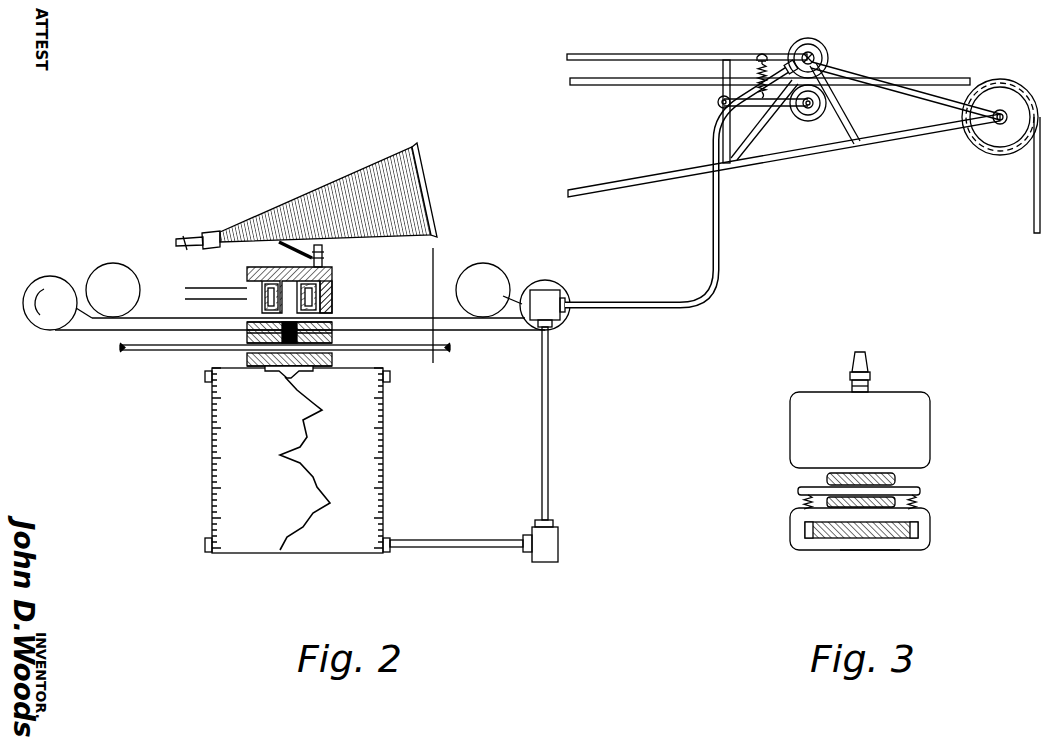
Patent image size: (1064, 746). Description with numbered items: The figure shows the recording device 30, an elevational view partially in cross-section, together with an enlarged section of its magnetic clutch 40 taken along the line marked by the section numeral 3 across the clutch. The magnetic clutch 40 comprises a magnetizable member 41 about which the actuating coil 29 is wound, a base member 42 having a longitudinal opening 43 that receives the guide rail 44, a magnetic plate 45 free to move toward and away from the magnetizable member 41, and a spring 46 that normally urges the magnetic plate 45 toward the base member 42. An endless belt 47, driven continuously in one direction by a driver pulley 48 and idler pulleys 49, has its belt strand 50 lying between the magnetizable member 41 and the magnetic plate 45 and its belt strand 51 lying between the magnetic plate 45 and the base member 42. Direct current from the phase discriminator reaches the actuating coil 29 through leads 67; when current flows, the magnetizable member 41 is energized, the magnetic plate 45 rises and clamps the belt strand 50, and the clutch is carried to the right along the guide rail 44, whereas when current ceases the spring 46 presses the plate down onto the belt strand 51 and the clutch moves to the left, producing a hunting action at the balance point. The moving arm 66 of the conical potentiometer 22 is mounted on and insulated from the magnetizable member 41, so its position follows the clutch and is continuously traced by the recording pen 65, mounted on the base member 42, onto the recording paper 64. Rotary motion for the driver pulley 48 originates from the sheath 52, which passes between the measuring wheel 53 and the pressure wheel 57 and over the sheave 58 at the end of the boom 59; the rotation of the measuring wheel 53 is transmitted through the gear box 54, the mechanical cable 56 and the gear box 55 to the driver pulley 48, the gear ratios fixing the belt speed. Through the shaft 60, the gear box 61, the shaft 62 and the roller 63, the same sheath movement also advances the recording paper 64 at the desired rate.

In FIG. 2, the potentiometer 22 is at (295, 200).
In FIG. 2, the moving arm 66 is at (282, 242).
In FIG. 3, the moving arm 66 is at (870, 358).
In FIG. 2, the magnetic clutch 40 is at (360, 298).
In FIG. 3, the magnetic clutch 40 is at (953, 429).
In FIG. 2, the magnetizable member 41 is at (247, 273).
In FIG. 3, the magnetizable member 41 is at (788, 422).
In FIG. 2, the actuating coil 29 is at (334, 285).
In FIG. 2, the leads 67 is at (188, 286).
In FIG. 2, the base member 42 is at (247, 340).
In FIG. 3, the base member 42 is at (790, 532).
In FIG. 2, the magnetic plate 45 is at (333, 326).
In FIG. 3, the magnetic plate 45 is at (922, 492).
In FIG. 2, the longitudinal opening 43 is at (333, 338).
In FIG. 3, the longitudinal opening 43 is at (826, 540).
In FIG. 2, the belt strand 50 is at (366, 316).
In FIG. 3, the belt strand 50 is at (825, 478).
In FIG. 2, the spring 46 is at (333, 360).
In FIG. 3, the spring 46 is at (916, 503).
In FIG. 3, the belt strand 51 is at (804, 500).
In FIG. 2, the guide rail 44 is at (128, 352).
In FIG. 3, the guide rail 44 is at (918, 530).
In FIG. 2, the endless belt 47 is at (82, 282).
In FIG. 2, the idler pulleys 49 is at (36, 328).
In FIG. 2, the driver pulley 48 is at (535, 280).
In FIG. 2, the gear box 55 is at (566, 298).
In FIG. 2, the mechanical cable 56 is at (592, 312).
In FIG. 2, the shaft 60 is at (548, 442).
In FIG. 2, the gear box 61 is at (560, 542).
In FIG. 2, the shaft 62 is at (461, 558).
In FIG. 2, the recording device 30 is at (142, 398).
In FIG. 2, the recording paper 64 is at (212, 468).
In FIG. 2, the roller 63 is at (202, 377).
In FIG. 2, the recording pen 65 is at (285, 380).
In FIG. 3, the recording pen 65 is at (872, 552).
In FIG. 2, the cable 3 is at (433, 248).
In FIG. 2, the boom 59 is at (646, 52).
In FIG. 2, the measuring wheel 53 is at (806, 40).
In FIG. 2, the gear box 54 is at (826, 56).
In FIG. 2, the pressure wheel 57 is at (810, 124).
In FIG. 2, the sheave 58 is at (1004, 80).
In FIG. 2, the sheath 52 is at (1033, 204).